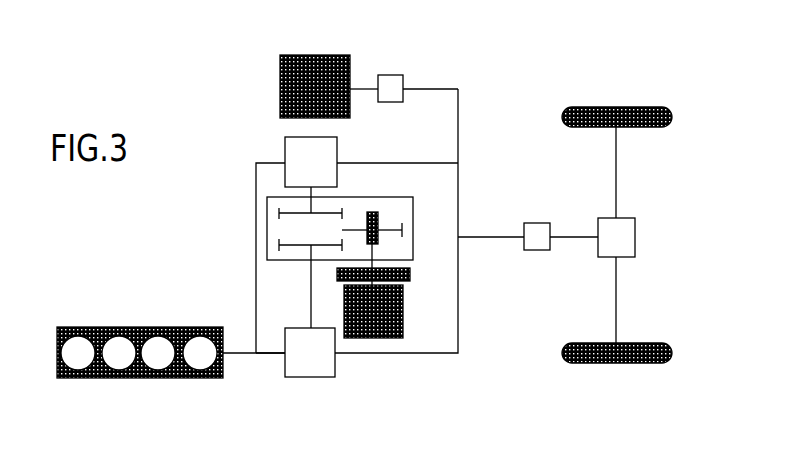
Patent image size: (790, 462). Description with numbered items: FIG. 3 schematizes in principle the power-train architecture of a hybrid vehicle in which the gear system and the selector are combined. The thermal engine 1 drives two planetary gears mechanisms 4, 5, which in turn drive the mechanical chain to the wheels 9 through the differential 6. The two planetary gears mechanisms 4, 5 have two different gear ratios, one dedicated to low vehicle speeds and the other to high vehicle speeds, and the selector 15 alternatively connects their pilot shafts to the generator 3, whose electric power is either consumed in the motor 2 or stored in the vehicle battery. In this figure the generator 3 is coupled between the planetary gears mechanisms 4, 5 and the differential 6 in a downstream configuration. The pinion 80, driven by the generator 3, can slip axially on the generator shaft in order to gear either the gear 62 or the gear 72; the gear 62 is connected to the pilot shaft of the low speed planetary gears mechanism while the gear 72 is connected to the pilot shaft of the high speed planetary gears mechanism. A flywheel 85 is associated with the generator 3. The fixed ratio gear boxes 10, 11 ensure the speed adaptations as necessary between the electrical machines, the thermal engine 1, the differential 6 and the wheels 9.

The thermal engine 1 is at (146, 325).
The motor 2 is at (280, 62).
The generator 3 is at (403, 338).
The planetary gears mechanism 4 is at (283, 140).
The planetary gears mechanism 5 is at (283, 368).
The differential 6 is at (640, 220).
The wheels 9 is at (580, 107).
The fixed ratio gear box 10 is at (398, 74).
The fixed ratio gear box 11 is at (540, 222).
The selector 15 is at (267, 197).
The gear 62 is at (267, 223).
The gear 72 is at (266, 245).
The pinion 80 is at (403, 237).
The flywheel 85 is at (410, 280).